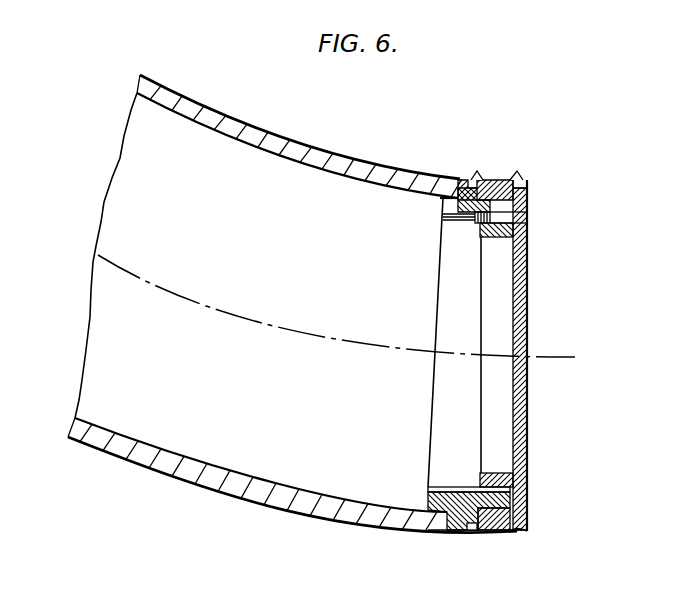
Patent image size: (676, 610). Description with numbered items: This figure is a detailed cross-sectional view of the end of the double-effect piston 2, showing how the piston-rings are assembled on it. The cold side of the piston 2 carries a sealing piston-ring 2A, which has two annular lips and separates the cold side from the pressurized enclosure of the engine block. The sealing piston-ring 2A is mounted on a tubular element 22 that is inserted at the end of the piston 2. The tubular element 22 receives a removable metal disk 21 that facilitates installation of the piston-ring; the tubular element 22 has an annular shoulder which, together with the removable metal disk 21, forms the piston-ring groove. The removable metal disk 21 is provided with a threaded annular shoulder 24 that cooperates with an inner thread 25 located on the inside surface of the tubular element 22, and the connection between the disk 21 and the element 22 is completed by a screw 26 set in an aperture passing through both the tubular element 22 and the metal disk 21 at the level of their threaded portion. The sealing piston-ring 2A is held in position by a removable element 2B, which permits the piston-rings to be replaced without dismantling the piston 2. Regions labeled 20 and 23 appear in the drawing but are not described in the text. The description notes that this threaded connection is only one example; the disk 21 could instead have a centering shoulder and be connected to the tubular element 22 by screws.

The double-effect piston 2 is at (238, 124).
The sealing piston-ring 2A is at (505, 180).
The removable element 2B is at (509, 176).
The flange 20 is at (497, 179).
The removable metal disk 21 is at (529, 432).
The tubular element 22 is at (460, 531).
The plate 23 is at (471, 487).
The threaded annular shoulder 24 is at (490, 240).
The inner thread 25 is at (453, 224).
The screw 26 is at (527, 221).